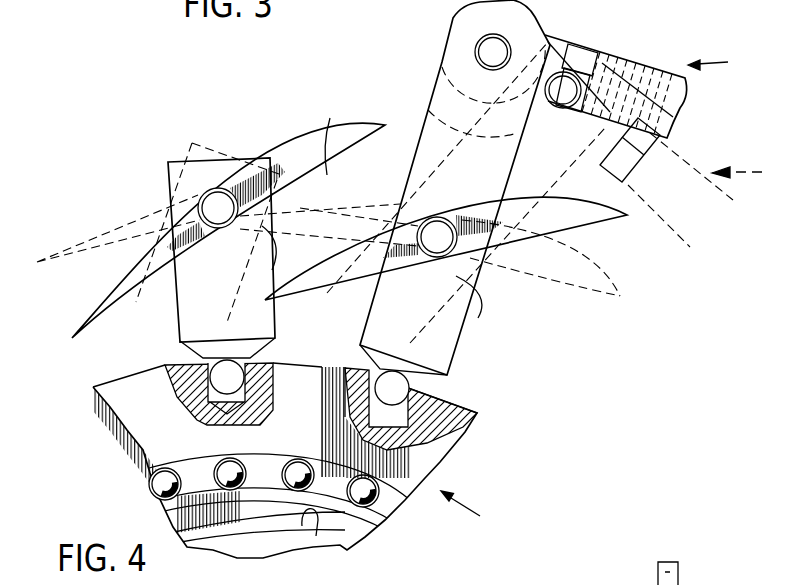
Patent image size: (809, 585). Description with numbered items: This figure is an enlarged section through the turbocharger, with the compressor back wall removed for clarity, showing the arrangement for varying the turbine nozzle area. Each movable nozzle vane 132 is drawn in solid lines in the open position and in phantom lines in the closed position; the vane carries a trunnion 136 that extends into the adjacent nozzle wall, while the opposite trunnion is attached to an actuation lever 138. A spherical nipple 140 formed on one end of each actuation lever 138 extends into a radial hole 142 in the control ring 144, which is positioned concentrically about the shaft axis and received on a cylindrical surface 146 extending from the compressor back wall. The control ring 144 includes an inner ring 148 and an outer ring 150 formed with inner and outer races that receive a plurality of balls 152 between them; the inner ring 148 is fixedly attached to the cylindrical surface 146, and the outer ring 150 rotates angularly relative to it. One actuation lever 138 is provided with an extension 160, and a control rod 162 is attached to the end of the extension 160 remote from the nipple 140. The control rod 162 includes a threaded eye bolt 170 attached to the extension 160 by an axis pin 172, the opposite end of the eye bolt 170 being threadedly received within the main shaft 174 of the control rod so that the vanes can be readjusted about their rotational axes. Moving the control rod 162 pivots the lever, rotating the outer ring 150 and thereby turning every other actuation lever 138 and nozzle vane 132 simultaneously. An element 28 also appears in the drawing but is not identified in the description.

The housing 28 is at (683, 584).
The nozzle vane 132 is at (384, 124).
The trunnion 136 is at (208, 198).
The actuation lever 138 is at (273, 250).
The spherical nipple 140 is at (238, 372).
The radial hole 142 is at (238, 393).
The control ring 144 is at (477, 509).
The cylindrical surface 146 is at (314, 530).
The inner ring 148 is at (357, 522).
The outer ring 150 is at (437, 445).
The balls 152 is at (378, 497).
The extension 160 is at (437, 168).
The control rod 162 is at (743, 117).
The threaded eye bolt 170 is at (535, 30).
The axis pin 172 is at (476, 54).
The main shaft 174 is at (632, 60).